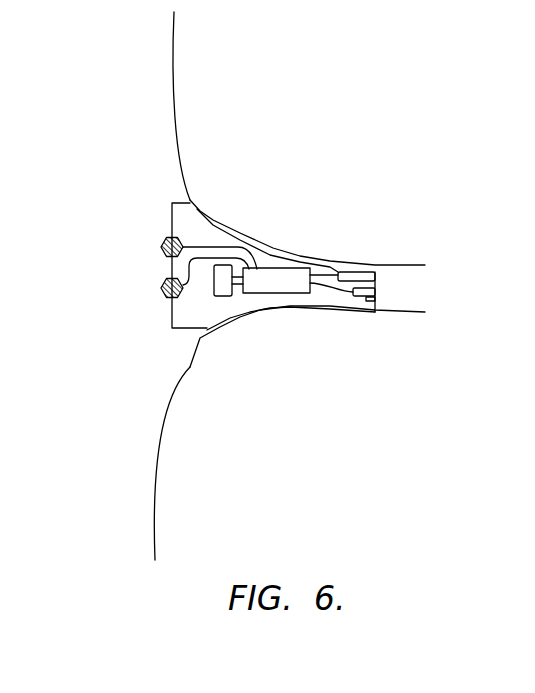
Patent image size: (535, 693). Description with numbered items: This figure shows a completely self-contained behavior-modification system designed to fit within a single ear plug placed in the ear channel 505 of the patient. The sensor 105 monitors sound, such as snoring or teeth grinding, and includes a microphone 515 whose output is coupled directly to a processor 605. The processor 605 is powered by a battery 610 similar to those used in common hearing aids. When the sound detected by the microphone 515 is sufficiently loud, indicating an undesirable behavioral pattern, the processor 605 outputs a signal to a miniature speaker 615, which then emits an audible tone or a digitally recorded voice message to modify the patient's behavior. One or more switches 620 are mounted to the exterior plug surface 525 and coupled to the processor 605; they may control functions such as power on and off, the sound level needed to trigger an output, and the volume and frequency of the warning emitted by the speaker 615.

The sensor 105 is at (113, 183).
The ear channel 505 is at (411, 314).
The microphone 515 is at (366, 276).
The exterior plug surface 525 is at (176, 322).
The processor 605 is at (290, 286).
The battery 610 is at (225, 297).
The miniature speaker 615 is at (378, 297).
The switches 620 is at (160, 249).